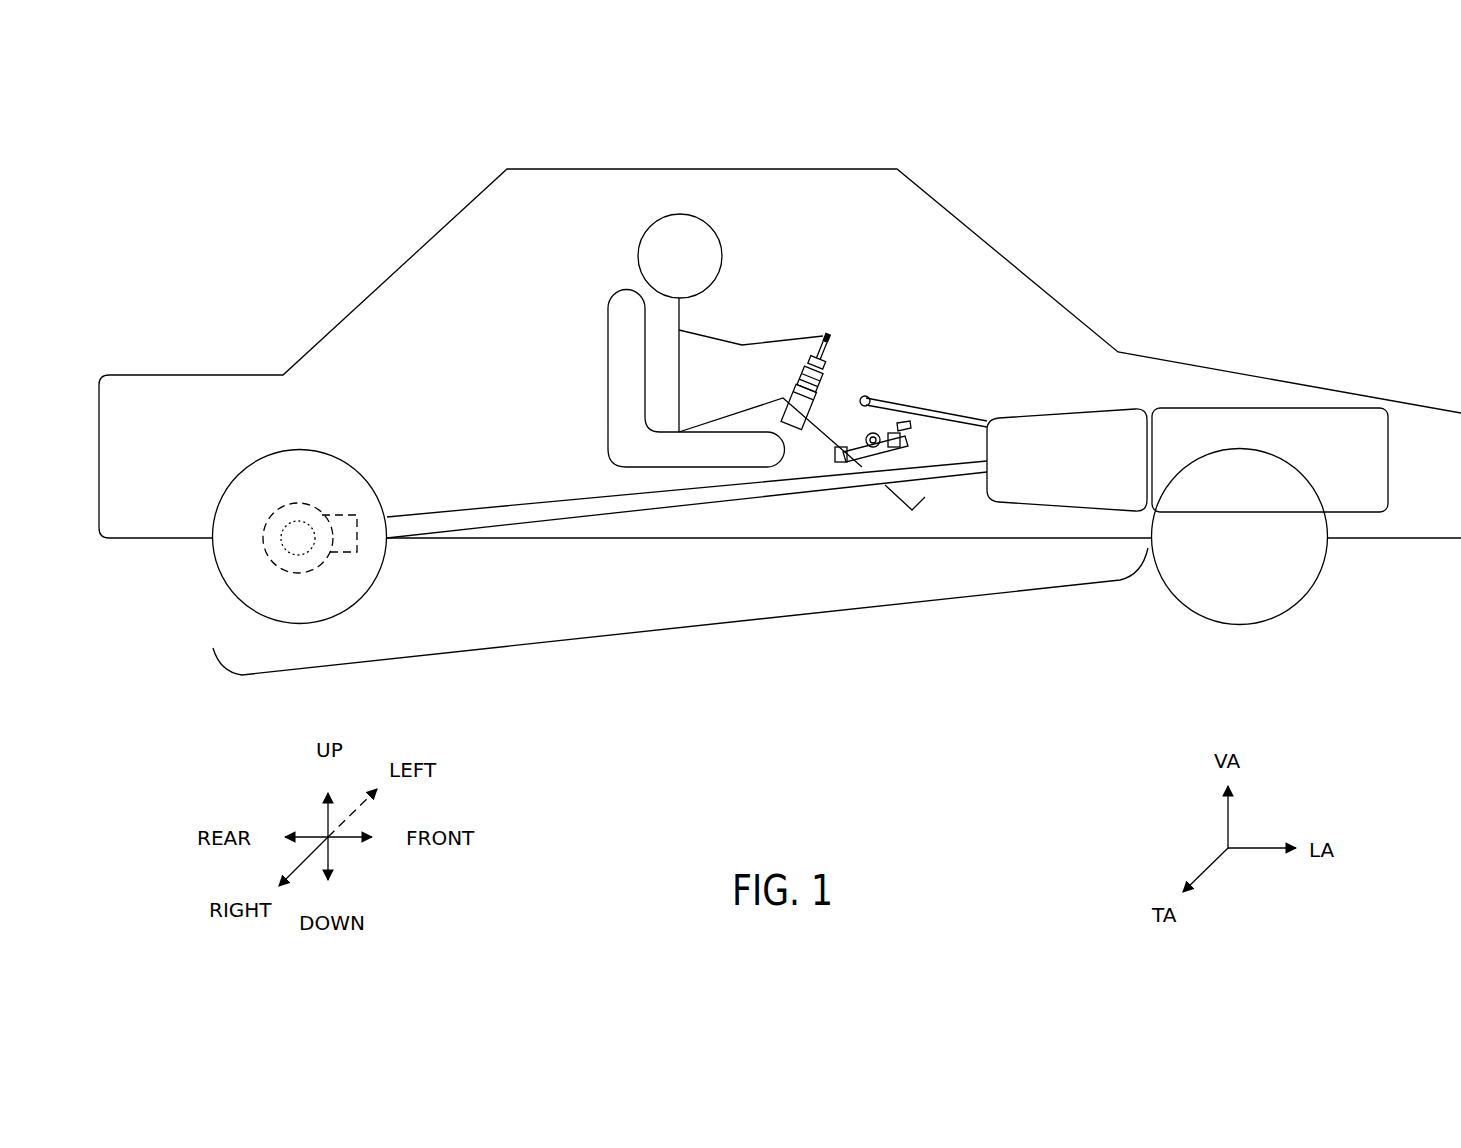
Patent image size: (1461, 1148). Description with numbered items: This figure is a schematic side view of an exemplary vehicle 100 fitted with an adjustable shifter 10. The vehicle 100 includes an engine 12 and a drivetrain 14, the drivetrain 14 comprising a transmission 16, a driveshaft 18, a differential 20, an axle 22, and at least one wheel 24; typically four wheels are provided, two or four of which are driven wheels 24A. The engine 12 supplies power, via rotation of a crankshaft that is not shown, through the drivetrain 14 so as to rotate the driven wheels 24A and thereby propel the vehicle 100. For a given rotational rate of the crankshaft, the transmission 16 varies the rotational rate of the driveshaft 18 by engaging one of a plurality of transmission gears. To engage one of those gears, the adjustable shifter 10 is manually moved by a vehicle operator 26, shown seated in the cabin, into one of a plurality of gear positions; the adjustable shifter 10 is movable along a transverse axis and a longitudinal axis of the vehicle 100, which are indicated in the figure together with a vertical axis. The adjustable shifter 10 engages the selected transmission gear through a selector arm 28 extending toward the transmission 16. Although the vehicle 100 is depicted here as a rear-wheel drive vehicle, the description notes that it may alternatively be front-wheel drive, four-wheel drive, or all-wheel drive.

The vehicle 100 is at (1372, 118).
The adjustable shifter 10 is at (851, 350).
The engine 12 is at (1270, 460).
The drivetrain 14 is at (685, 628).
The transmission 16 is at (1067, 460).
The driveshaft 18 is at (705, 507).
The differential 20 is at (318, 502).
The axle 22 is at (263, 537).
The wheel 24 is at (1275, 615).
The driven wheels 24A is at (385, 563).
The vehicle operator 26 is at (636, 221).
The selector arm 28 is at (907, 402).